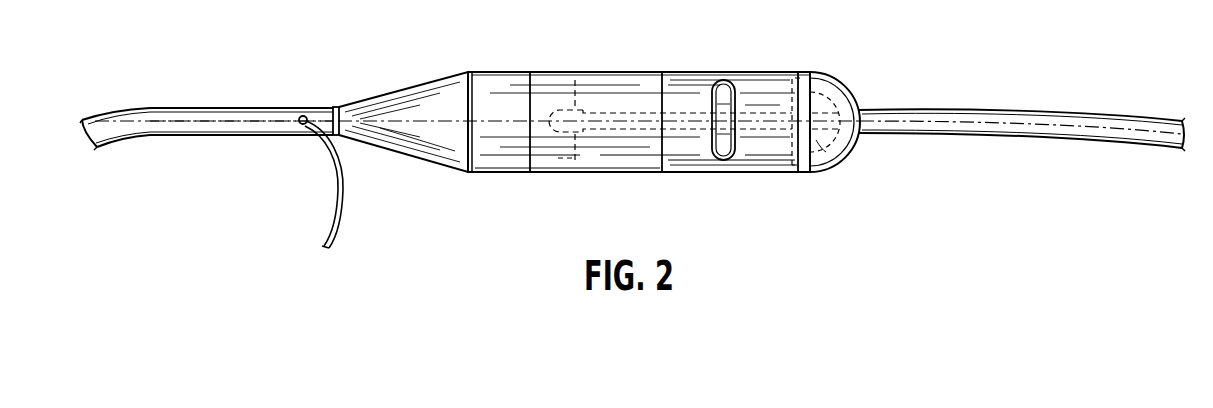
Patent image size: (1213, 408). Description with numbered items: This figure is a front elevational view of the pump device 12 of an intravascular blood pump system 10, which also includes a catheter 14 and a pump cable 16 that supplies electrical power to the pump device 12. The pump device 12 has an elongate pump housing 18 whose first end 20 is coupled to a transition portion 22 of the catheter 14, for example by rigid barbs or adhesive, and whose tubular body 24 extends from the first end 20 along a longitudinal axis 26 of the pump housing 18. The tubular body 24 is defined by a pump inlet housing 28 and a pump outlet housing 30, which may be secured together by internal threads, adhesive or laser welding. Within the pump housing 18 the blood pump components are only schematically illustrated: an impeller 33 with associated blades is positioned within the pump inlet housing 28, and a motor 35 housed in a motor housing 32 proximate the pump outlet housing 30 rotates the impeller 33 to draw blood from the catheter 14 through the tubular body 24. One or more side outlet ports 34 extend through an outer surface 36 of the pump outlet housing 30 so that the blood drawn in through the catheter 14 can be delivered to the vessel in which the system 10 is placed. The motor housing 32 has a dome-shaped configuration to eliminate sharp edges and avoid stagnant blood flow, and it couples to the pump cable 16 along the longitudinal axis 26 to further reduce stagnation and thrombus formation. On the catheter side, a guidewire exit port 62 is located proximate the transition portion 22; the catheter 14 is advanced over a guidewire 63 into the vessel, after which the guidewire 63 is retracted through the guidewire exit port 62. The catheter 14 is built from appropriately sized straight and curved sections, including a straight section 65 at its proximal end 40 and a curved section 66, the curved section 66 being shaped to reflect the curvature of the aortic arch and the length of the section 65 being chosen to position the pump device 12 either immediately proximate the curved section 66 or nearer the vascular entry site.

The intravascular blood pump system 10 is at (752, 29).
The pump device 12 is at (627, 51).
The catheter 14 is at (165, 106).
The pump cable 16 is at (950, 110).
The pump housing 18 is at (575, 70).
The first end 20 is at (529, 82).
The transition portion 22 is at (406, 88).
The tubular body 24 is at (638, 98).
The longitudinal axis 26 is at (222, 117).
The pump inlet housing 28 is at (598, 173).
The pump outlet housing 30 is at (712, 173).
The motor housing 32 is at (850, 95).
The impeller 33 is at (560, 160).
The side outlet ports 34 is at (712, 104).
The motor 35 is at (787, 157).
The outer surface 36 is at (757, 90).
The proximal end 40 is at (337, 116).
The guidewire exit port 62 is at (304, 116).
The guidewire 63 is at (346, 185).
The straight section 65 is at (268, 110).
The curved section 66 is at (120, 146).